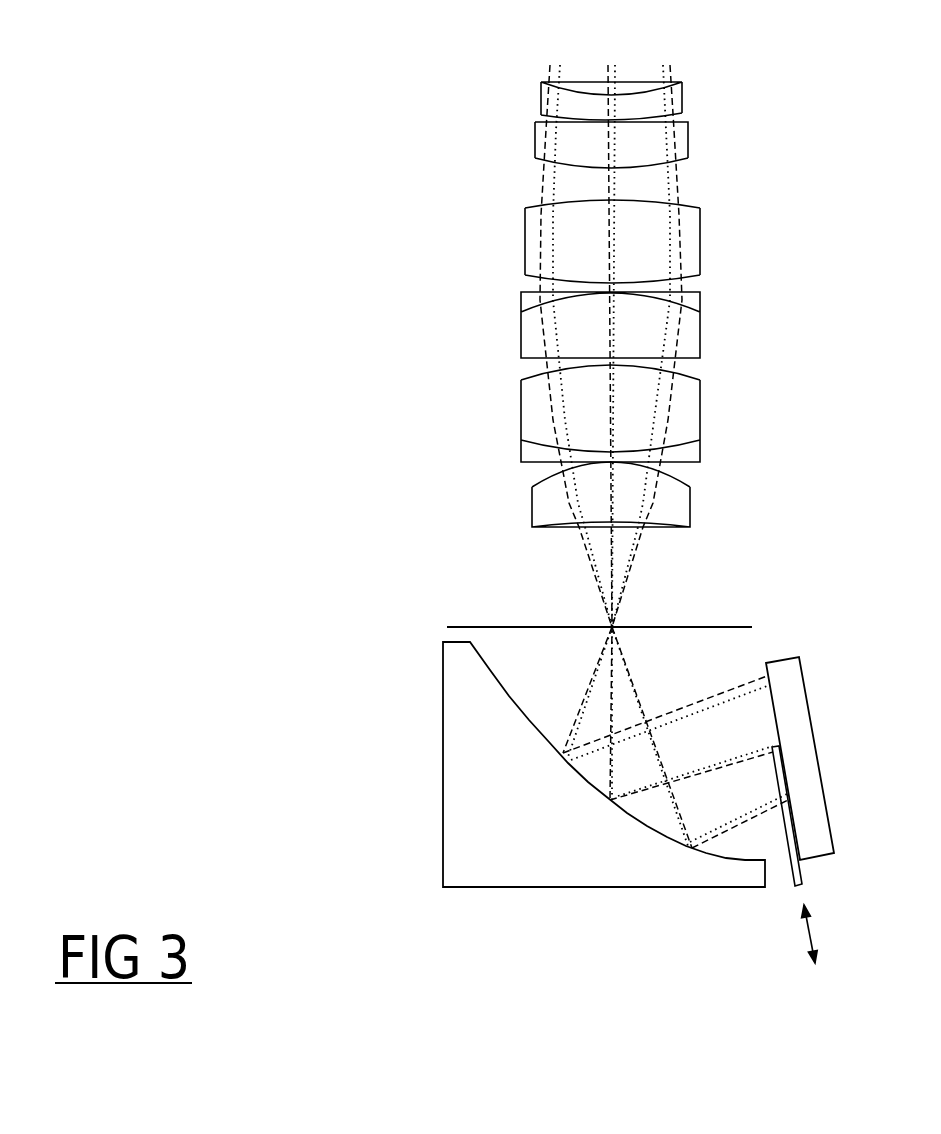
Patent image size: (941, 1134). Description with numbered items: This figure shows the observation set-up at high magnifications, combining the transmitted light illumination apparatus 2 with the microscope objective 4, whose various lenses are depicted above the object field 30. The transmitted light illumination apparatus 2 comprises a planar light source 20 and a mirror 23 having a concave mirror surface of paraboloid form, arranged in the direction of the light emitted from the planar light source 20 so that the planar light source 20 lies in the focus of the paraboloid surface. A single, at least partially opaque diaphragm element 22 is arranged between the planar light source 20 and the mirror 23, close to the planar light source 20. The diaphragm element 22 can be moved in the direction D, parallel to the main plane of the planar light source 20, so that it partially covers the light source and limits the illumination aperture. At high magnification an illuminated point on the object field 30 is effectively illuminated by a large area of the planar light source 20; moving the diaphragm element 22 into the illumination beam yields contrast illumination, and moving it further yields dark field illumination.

The transmitted light illumination apparatus 2 is at (426, 734).
The microscope objective 4 is at (514, 314).
The planar light source 20 is at (818, 758).
The diaphragm element 22 is at (797, 876).
The mirror 23 is at (460, 822).
The object field 30 is at (491, 622).
The direction of movement of the diaphragm element D is at (810, 925).